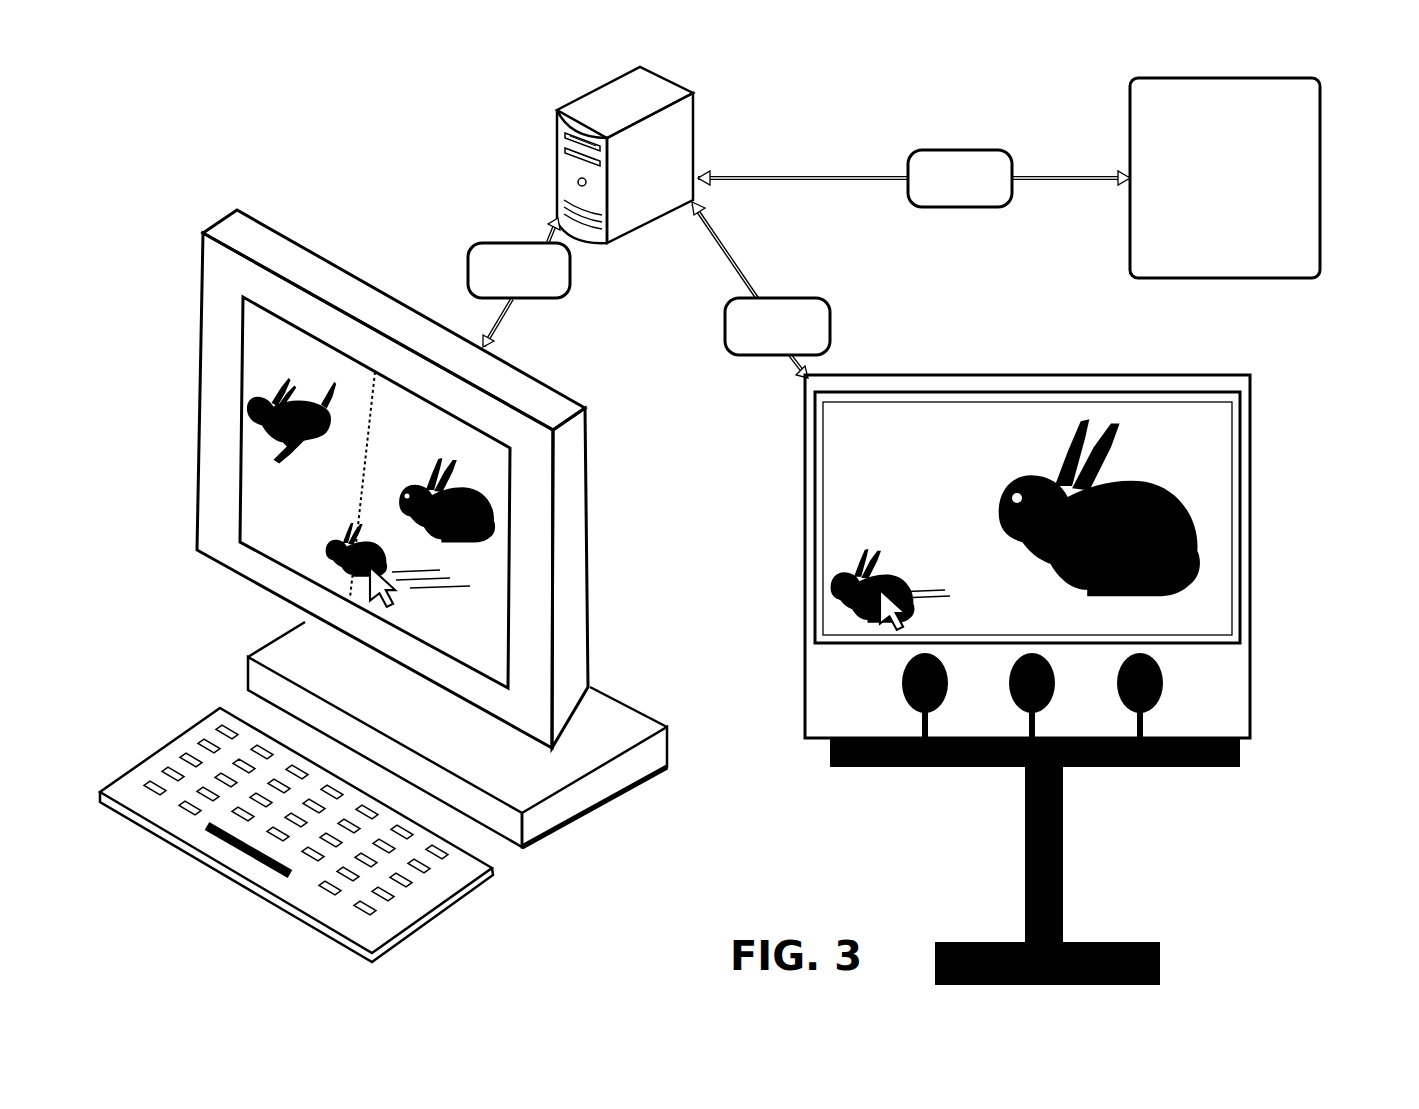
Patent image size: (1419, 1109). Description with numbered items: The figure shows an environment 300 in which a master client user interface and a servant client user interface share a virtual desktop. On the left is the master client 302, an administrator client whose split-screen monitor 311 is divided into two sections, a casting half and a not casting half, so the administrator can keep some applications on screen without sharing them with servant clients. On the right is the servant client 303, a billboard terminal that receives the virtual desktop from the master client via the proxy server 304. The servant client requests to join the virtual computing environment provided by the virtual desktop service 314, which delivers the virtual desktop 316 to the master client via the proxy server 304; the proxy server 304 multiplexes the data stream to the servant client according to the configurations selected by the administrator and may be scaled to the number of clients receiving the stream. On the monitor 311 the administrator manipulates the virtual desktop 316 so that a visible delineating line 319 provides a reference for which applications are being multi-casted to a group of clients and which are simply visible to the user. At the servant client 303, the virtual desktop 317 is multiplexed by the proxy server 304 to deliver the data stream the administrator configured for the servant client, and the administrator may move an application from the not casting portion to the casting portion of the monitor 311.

The environment 300 is at (1365, 148).
The master client 302 is at (562, 829).
The servant client 303 is at (1238, 762).
The proxy server 304 is at (694, 96).
The split-screen monitor 311 is at (585, 560).
The virtual desktop service 314 is at (1225, 178).
The virtual desktop 316 is at (912, 152).
The virtual desktop 317 is at (730, 300).
The delineating line 319 is at (362, 502).